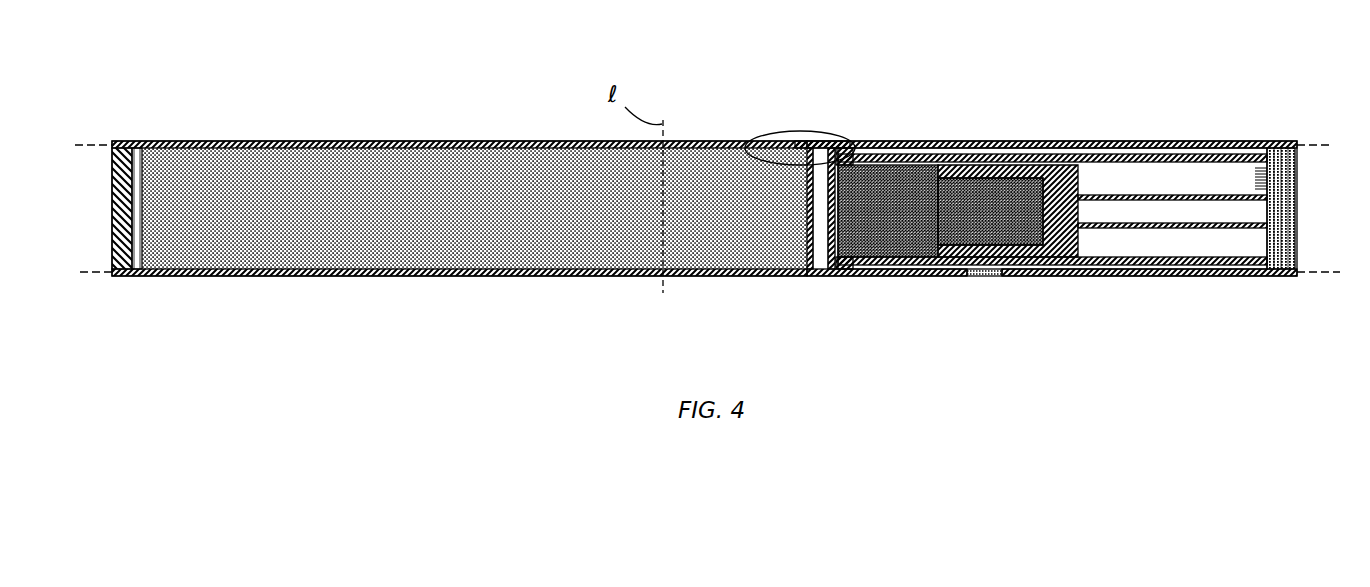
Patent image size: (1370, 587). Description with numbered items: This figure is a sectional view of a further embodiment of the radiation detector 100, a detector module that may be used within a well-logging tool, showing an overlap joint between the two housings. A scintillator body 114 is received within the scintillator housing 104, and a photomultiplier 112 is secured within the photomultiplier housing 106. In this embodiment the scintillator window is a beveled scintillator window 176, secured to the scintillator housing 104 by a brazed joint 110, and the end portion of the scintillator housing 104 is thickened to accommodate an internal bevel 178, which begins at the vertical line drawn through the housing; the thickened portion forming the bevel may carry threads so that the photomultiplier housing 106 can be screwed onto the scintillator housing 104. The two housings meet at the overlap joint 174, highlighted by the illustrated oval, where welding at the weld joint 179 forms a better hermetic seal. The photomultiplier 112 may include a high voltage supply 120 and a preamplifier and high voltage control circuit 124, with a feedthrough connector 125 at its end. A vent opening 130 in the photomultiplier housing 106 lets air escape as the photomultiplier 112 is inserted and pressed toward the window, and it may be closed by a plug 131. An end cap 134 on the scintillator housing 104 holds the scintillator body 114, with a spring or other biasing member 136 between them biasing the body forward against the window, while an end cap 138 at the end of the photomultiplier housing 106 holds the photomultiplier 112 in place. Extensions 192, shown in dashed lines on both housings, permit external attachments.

The radiation detector 100 is at (880, 33).
The scintillator housing 104 is at (465, 142).
The photomultiplier housing 106 is at (1163, 142).
The brazed joint 110 is at (803, 148).
The photomultiplier 112 is at (908, 163).
The scintillator body 114 is at (237, 160).
The high voltage supply 120 is at (1050, 153).
The preamplifier and high voltage control circuit 124 is at (1137, 230).
The feedthrough connector 125 is at (1284, 178).
The vent opening 130 is at (1002, 277).
The plug 131 is at (970, 277).
The end cap 134 is at (122, 278).
The spring or other biasing member 136 is at (121, 146).
The end cap 138 is at (1296, 238).
The overlap joint 174 is at (821, 128).
The beveled scintillator window 176 is at (820, 257).
The internal bevel 178 is at (793, 257).
The weld joint 179 is at (790, 141).
The extensions 192 is at (92, 280).